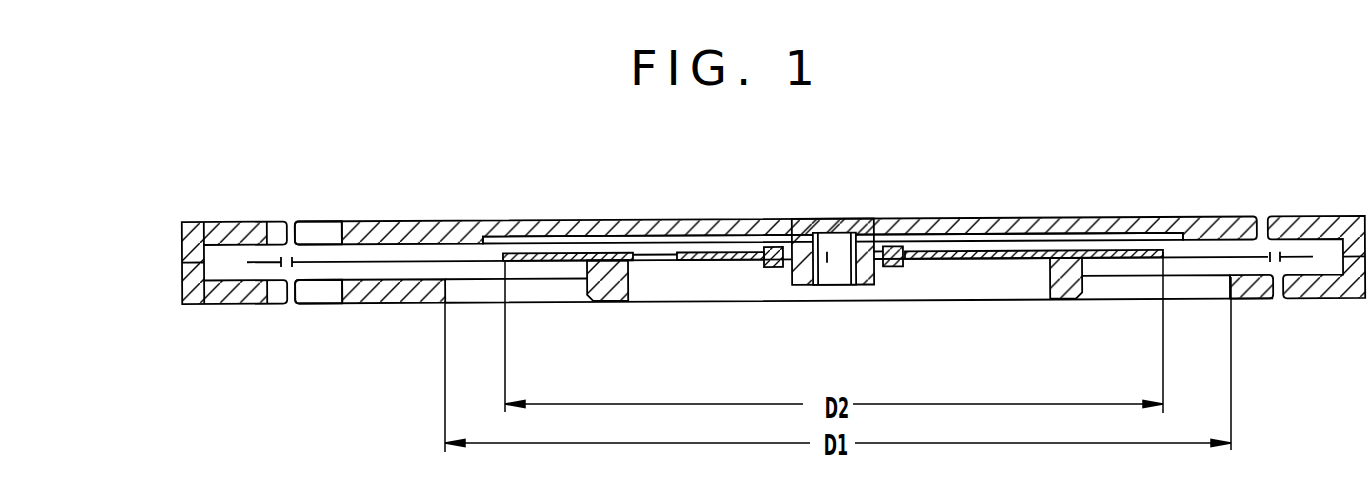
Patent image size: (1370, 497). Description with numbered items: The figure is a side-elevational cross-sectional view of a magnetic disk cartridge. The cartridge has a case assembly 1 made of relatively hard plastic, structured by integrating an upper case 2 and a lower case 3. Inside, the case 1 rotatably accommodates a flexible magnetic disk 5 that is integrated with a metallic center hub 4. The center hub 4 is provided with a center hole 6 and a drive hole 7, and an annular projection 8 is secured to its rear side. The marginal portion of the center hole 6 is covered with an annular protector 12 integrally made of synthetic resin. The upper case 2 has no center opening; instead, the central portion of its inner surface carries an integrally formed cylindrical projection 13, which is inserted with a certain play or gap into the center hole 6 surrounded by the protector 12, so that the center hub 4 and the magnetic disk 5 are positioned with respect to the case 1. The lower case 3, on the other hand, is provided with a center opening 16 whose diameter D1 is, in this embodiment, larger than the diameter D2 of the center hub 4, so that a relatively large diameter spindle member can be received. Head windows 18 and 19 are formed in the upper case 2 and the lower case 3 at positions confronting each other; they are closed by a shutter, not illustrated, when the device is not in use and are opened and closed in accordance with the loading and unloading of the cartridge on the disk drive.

The case assembly 1 is at (470, 219).
The upper case 2 is at (426, 230).
The lower case 3 is at (411, 290).
The center hub 4 is at (606, 242).
The flexible magnetic disk 5 is at (364, 258).
The center hole 6 is at (789, 268).
The drive hole 7 is at (660, 259).
The annular projection 8 is at (607, 283).
The annular protector 12 is at (893, 268).
The cylindrical projection 13 is at (863, 270).
The center opening 16 is at (1190, 285).
The head window 18 is at (312, 228).
The head window 19 is at (316, 296).